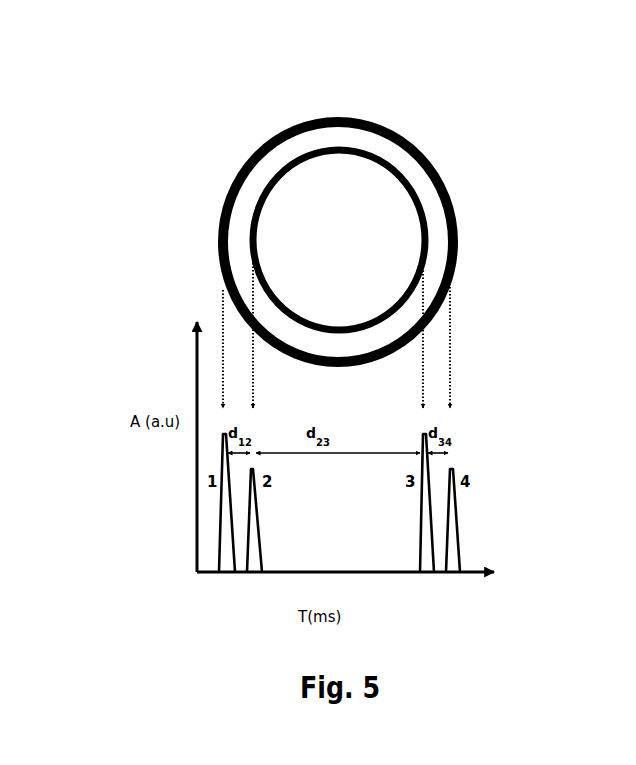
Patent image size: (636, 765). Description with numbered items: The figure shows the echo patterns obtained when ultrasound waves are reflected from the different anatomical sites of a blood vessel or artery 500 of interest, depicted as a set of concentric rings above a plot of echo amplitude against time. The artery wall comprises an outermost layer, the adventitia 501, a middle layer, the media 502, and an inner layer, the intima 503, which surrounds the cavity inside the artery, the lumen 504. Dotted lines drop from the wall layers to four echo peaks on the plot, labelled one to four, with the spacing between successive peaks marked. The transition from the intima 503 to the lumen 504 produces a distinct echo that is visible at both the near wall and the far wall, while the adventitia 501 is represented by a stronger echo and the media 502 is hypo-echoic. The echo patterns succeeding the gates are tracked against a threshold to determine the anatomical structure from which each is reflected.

The artery 500 is at (323, 199).
The adventitia 501 is at (272, 134).
The media 502 is at (262, 178).
The intima 503 is at (250, 247).
The lumen 504 is at (390, 248).